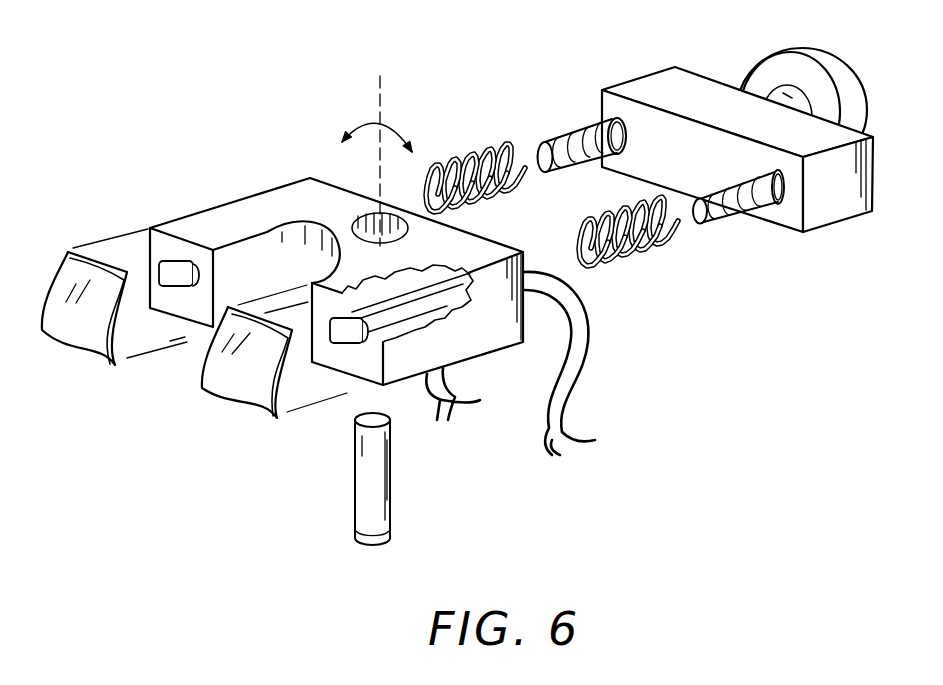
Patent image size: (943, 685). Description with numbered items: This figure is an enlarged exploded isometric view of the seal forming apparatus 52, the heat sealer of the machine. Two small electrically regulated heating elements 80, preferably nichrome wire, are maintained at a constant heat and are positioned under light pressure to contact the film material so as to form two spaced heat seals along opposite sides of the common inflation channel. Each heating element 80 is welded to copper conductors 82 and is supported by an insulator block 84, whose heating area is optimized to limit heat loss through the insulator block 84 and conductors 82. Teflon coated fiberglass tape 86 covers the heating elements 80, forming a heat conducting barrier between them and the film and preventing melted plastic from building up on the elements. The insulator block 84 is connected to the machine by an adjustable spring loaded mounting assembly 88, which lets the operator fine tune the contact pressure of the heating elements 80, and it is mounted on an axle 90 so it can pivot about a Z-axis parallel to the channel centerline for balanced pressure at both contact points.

The seal forming apparatus 52 is at (230, 140).
The insulator block 84 is at (255, 215).
The heating elements 80 is at (158, 262).
The copper conductors 82 is at (441, 273).
The Teflon coated fiberglass tape 86 is at (82, 320).
The adjustable spring loaded mounting assembly 88 is at (651, 46).
The axle 90 is at (365, 487).